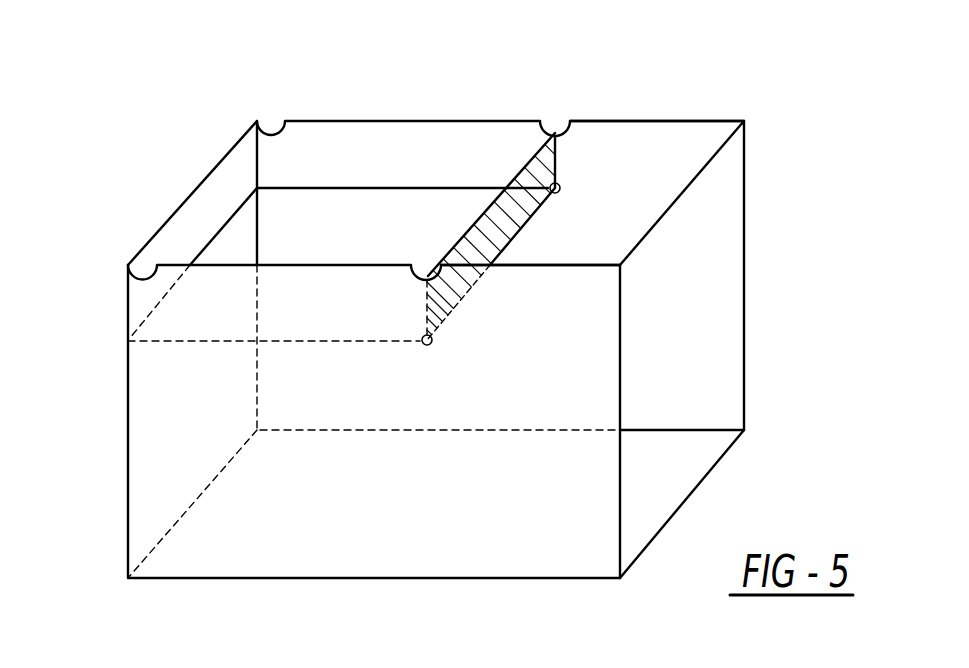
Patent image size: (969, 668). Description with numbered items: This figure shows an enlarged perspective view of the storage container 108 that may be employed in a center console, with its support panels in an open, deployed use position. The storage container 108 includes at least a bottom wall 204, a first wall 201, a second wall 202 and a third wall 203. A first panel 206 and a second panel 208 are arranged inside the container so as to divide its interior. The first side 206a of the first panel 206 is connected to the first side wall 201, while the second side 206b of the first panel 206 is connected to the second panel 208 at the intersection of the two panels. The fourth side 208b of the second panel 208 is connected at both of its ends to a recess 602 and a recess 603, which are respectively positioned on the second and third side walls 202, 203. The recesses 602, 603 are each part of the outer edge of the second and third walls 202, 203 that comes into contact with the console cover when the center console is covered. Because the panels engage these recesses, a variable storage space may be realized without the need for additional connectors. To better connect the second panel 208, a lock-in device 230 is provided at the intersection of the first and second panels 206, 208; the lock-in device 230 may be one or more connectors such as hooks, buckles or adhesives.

The storage container 108 is at (183, 603).
The first wall 201 is at (218, 197).
The second wall 202 is at (142, 295).
The third wall 203 is at (670, 158).
The bottom wall 204 is at (642, 488).
The first panel 206 is at (360, 213).
The first side 206a is at (152, 310).
The second side 206b is at (393, 342).
The second panel 208 is at (530, 172).
The fourth side 208b is at (534, 155).
The lock-in device 230 is at (561, 190).
The recess 602 is at (565, 266).
The recess 603 is at (688, 121).